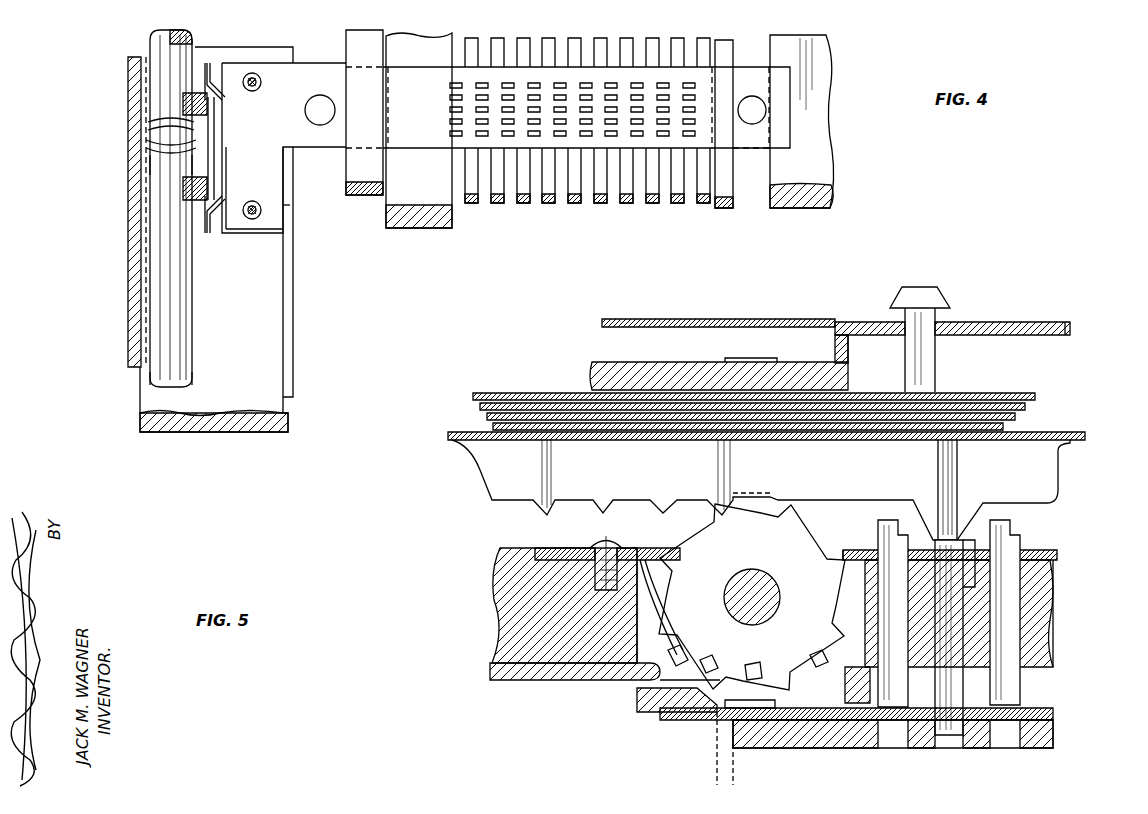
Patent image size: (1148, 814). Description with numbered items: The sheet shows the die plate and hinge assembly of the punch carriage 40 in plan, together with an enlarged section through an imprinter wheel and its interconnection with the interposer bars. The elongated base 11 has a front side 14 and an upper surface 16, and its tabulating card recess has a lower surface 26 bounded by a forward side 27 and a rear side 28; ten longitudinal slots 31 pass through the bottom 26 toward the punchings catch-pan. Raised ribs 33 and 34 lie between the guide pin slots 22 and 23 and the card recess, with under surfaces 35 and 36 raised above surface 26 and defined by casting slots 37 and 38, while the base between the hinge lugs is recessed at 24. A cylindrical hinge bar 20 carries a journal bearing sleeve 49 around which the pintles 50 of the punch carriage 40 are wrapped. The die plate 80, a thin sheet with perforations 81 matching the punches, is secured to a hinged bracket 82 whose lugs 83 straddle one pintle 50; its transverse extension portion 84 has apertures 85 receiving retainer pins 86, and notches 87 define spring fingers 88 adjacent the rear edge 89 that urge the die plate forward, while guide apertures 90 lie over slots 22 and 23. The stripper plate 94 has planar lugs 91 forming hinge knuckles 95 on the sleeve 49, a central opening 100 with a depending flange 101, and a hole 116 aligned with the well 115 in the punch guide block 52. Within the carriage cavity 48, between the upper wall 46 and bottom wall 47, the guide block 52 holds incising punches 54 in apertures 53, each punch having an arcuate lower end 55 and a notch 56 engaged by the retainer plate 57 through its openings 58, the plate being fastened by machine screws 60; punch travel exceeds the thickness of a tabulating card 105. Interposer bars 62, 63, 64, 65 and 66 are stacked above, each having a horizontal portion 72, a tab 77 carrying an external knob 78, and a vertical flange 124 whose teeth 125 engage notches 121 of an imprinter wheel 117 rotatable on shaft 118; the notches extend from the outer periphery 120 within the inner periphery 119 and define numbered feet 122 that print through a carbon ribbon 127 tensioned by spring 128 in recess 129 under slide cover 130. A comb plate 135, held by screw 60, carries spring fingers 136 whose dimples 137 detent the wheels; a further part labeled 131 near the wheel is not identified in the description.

In FIG. 4, the base 11 is at (289, 357).
In FIG. 5, the front side 14 is at (959, 512).
In FIG. 4, the upper surface 16 is at (822, 175).
In FIG. 4, the hinge bar 20 is at (152, 38).
In FIG. 4, the guide pin slot 22 is at (325, 190).
In FIG. 4, the guide pin slot 23 is at (758, 193).
In FIG. 4, the recessed portion 24 is at (262, 343).
In FIG. 4, the lower surface of recess 26 is at (427, 180).
In FIG. 5, the lower surface of recess 26 is at (760, 748).
In FIG. 4, the forward side 27 is at (754, 191).
In FIG. 4, the rear side 28 is at (368, 143).
In FIG. 4, the slots 31 is at (562, 203).
In FIG. 5, the slots 31 is at (893, 750).
In FIG. 4, the raised rib 33 is at (374, 180).
In FIG. 5, the raised rib 33 is at (661, 715).
In FIG. 4, the raised rib 34 is at (722, 208).
In FIG. 4, the under surface 35 is at (350, 196).
In FIG. 5, the under surface 35 is at (637, 705).
In FIG. 4, the under surface 36 is at (705, 206).
In FIG. 4, the slot 37 is at (383, 197).
In FIG. 5, the slot 37 is at (714, 768).
In FIG. 4, the slot 38 is at (712, 175).
In FIG. 4, the punch carriage 40 is at (124, 152).
In FIG. 5, the upper surface 46 is at (1012, 328).
In FIG. 5, the bottom wall 47 is at (490, 660).
In FIG. 5, the cavity 48 is at (1038, 365).
In FIG. 4, the journal bearing sleeve 49 is at (148, 138).
In FIG. 4, the pintles 50 is at (150, 160).
In FIG. 5, the punch guide block 52 is at (497, 590).
In FIG. 5, the apertures 53 is at (1055, 575).
In FIG. 5, the incising punch 54 is at (1010, 523).
In FIG. 5, the arcuate lower end 55 is at (1000, 714).
In FIG. 5, the notch 56 is at (1055, 553).
In FIG. 5, the punch retainer plate 57 is at (560, 549).
In FIG. 5, the openings 58 is at (966, 578).
In FIG. 5, the machine screw 60 is at (600, 538).
In FIG. 5, the interposer bar 62 is at (1059, 470).
In FIG. 5, the interposer bar 63 is at (1008, 426).
In FIG. 5, the interposer bar 64 is at (1020, 416).
In FIG. 5, the interposer bar 65 is at (1030, 405).
In FIG. 5, the interposer bar 66 is at (1040, 395).
In FIG. 5, the major horizontal portion 72 is at (830, 441).
In FIG. 5, the tab 77 is at (936, 360).
In FIG. 5, the knob 78 is at (940, 295).
In FIG. 4, the die plate 80 is at (334, 58).
In FIG. 5, the die plate 80 is at (790, 748).
In FIG. 4, the perforations 81 is at (515, 82).
In FIG. 5, the perforations 81 is at (860, 748).
In FIG. 4, the die hinge plate 82 is at (290, 240).
In FIG. 4, the pintles 83 is at (133, 70).
In FIG. 4, the transverse extension portion 84 is at (284, 205).
In FIG. 4, the apertures 85 is at (261, 80).
In FIG. 4, the retainer pins 86 is at (254, 73).
In FIG. 4, the notches 87 is at (220, 68).
In FIG. 4, the fingers 88 is at (210, 62).
In FIG. 4, the rear edge 89 is at (208, 125).
In FIG. 4, the guide apertures 90 is at (316, 108).
In FIG. 4, the planar lugs 91 is at (784, 160).
In FIG. 5, the stripper plate 94 is at (495, 675).
In FIG. 4, the hinge knuckles 95 is at (143, 98).
In FIG. 5, the central opening 100 is at (820, 748).
In FIG. 5, the depending flange 101 is at (840, 695).
In FIG. 5, the tabulating card 105 is at (1058, 713).
In FIG. 5, the printer wheel well 115 is at (637, 620).
In FIG. 5, the hole 116 is at (640, 675).
In FIG. 5, the imprinter wheel 117 is at (662, 548).
In FIG. 5, the shaft 118 is at (745, 575).
In FIG. 5, the first periphery 119 is at (805, 530).
In FIG. 5, the second periphery 120 is at (830, 525).
In FIG. 5, the notches 121 is at (716, 668).
In FIG. 5, the feet 122 is at (810, 660).
In FIG. 5, the vertical flange portion 124 is at (474, 463).
In FIG. 5, the teeth 125 is at (560, 498).
In FIG. 5, the carbon ribbon 127 is at (735, 358).
In FIG. 5, the tension spring 128 is at (692, 720).
In FIG. 5, the recess 129 is at (638, 362).
In FIG. 5, the slide cover 130 is at (720, 319).
In FIG. 5, the pawl 131 is at (703, 655).
In FIG. 5, the comb plate 135 is at (540, 555).
In FIG. 5, the spring fingers 136 is at (665, 608).
In FIG. 5, the dimpled portion 137 is at (688, 648).